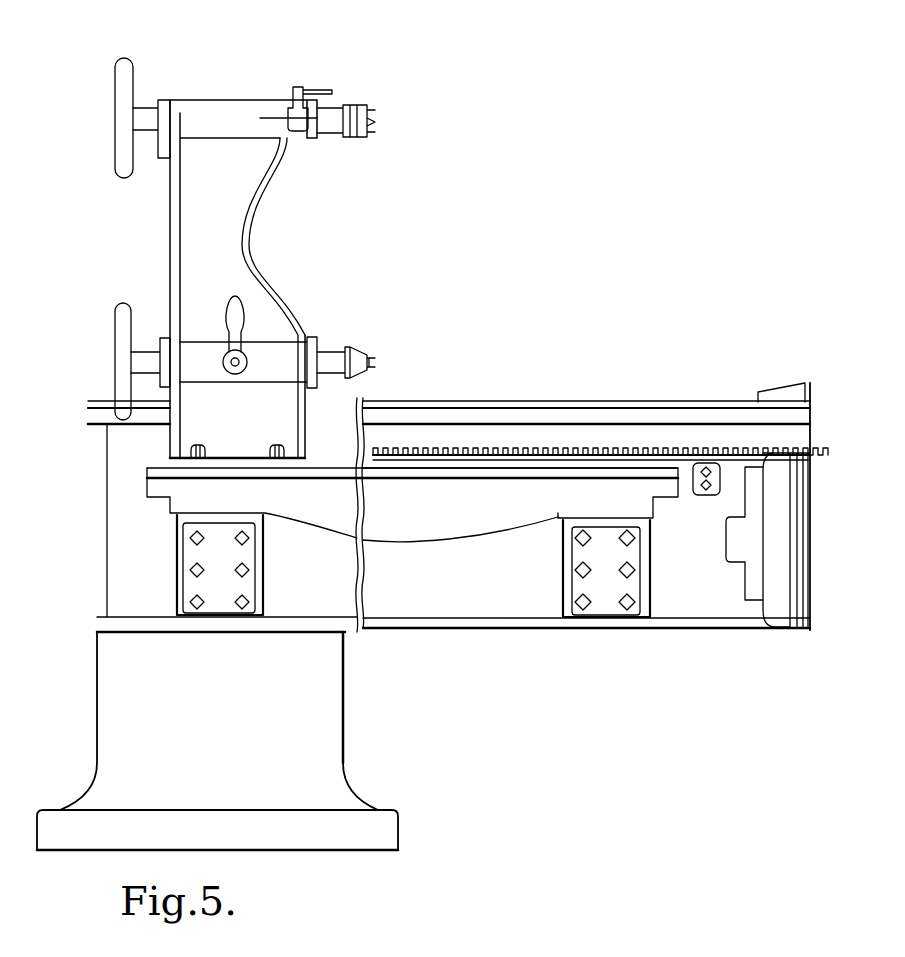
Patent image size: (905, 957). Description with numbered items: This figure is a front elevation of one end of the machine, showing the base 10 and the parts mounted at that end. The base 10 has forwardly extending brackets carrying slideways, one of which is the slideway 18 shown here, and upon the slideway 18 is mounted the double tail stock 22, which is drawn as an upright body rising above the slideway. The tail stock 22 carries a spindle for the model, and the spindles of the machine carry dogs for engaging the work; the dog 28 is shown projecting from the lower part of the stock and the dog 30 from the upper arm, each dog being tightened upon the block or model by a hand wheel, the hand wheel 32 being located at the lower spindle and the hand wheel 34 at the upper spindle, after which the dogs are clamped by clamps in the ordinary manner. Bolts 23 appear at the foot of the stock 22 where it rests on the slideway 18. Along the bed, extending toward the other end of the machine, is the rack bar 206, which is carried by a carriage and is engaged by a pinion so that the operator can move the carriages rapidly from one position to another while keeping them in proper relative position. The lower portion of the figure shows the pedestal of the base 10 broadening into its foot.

The base 10 is at (423, 616).
The slideway 18 is at (302, 472).
The double tail stock 22 is at (243, 279).
The bolts 23 is at (275, 450).
The dog 28 is at (360, 360).
The dog 30 is at (360, 108).
The hand wheel 32 is at (122, 357).
The hand wheel 34 is at (120, 132).
The rack bar 206 is at (448, 453).